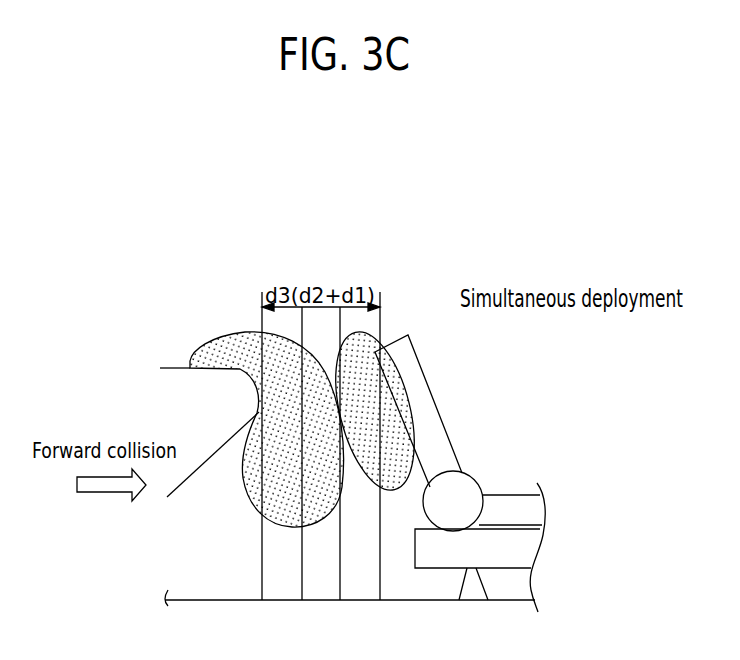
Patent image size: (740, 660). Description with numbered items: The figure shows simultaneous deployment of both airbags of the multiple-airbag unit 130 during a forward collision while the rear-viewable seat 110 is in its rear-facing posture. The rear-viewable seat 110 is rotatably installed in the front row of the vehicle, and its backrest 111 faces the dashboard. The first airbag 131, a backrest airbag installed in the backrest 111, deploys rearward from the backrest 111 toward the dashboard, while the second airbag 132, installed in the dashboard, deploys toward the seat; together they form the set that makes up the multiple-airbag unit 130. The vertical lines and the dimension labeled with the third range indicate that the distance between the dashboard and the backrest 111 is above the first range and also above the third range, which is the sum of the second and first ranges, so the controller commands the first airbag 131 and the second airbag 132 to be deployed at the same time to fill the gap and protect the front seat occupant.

The rear-viewable seat 110 is at (512, 495).
The backrest 111 is at (411, 338).
The multiple-airbag unit 130 is at (170, 518).
The first airbag 131 is at (397, 470).
The second airbag 132 is at (276, 487).